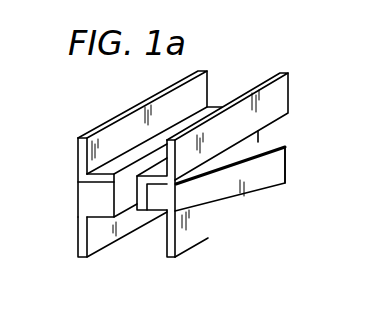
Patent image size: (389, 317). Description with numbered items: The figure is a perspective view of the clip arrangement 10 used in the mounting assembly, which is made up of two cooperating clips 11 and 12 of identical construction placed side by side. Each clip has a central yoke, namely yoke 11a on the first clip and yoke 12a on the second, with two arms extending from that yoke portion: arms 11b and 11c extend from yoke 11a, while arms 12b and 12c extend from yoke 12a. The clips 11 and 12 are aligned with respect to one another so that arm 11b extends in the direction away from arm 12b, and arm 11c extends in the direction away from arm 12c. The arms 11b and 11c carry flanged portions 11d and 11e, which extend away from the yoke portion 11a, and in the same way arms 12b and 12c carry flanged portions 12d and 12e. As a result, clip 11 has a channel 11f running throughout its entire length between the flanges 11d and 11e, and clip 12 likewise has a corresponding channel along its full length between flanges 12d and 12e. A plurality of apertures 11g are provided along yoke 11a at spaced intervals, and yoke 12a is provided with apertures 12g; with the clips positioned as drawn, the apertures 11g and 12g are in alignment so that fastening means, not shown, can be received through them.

The clip arrangement 10 is at (176, 180).
The clip 11 is at (102, 122).
The yoke 11a is at (114, 199).
The arm 11b is at (201, 108).
The arm 11c is at (96, 226).
The flanged portion 11d is at (78, 162).
The flanged portion 11e is at (100, 246).
The channel 11f is at (83, 191).
The apertures 11g is at (160, 157).
The clip 12 is at (294, 93).
The yoke 12a is at (148, 197).
The arm 12b is at (194, 164).
The arm 12c is at (158, 222).
The flanged portion 12d is at (270, 117).
The flanged portion 12e is at (285, 177).
The apertures 12g is at (200, 168).